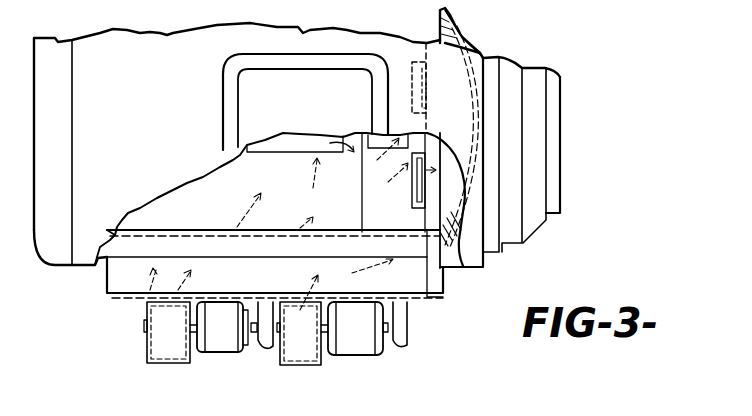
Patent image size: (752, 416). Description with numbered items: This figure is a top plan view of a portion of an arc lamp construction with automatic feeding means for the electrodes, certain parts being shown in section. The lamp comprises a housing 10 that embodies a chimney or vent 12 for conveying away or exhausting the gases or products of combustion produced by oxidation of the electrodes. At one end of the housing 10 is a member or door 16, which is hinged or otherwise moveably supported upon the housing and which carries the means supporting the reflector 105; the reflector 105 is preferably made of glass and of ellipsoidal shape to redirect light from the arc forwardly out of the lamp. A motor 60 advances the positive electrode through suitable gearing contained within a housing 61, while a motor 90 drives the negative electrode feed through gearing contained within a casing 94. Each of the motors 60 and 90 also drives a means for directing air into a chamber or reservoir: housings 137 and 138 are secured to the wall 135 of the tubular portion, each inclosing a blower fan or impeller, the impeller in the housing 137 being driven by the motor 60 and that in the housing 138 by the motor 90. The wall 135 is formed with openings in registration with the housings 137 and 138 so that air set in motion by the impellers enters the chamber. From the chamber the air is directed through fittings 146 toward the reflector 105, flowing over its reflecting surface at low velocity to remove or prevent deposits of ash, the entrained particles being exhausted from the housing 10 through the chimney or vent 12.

The housing 10 is at (121, 181).
The chimney or vent 12 is at (247, 100).
The door 16 is at (537, 162).
The reflector 105 is at (455, 31).
The fitting 146 is at (426, 78).
The wall 135 is at (127, 303).
The housing 137 is at (170, 367).
The motor 60 is at (233, 350).
The housing 61 is at (263, 337).
The housing 138 is at (298, 365).
The motor 90 is at (363, 348).
The casing 94 is at (400, 327).